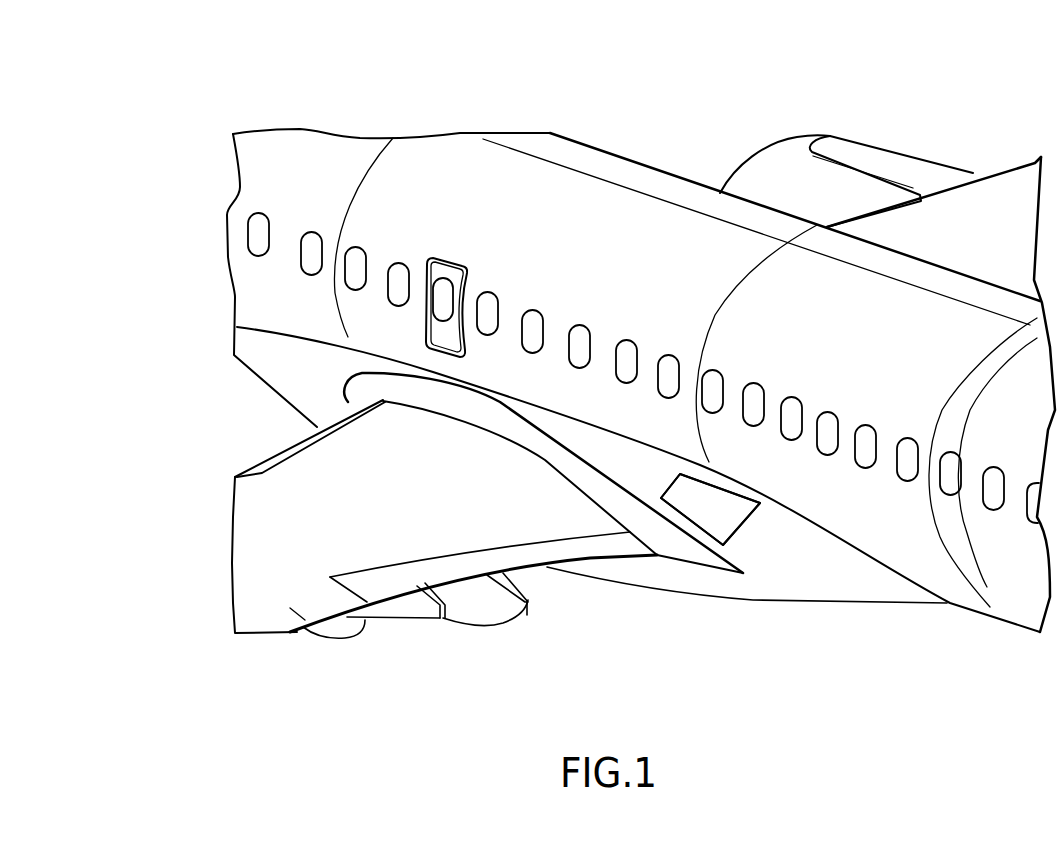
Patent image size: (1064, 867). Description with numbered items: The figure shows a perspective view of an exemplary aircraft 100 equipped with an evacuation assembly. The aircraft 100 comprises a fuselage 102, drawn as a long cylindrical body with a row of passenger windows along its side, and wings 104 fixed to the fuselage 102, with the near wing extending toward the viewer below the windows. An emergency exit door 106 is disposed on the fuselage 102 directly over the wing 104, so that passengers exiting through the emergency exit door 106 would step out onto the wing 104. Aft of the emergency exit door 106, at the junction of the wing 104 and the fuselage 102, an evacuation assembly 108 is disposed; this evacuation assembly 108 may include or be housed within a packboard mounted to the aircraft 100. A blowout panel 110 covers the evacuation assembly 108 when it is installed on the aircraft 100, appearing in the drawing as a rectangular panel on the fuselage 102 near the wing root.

The aircraft 100 is at (176, 119).
The fuselage 102 is at (257, 296).
The wings 104 is at (433, 493).
The emergency exit door 106 is at (438, 257).
The evacuation assembly 108 is at (740, 525).
The blowout panel 110 is at (727, 523).